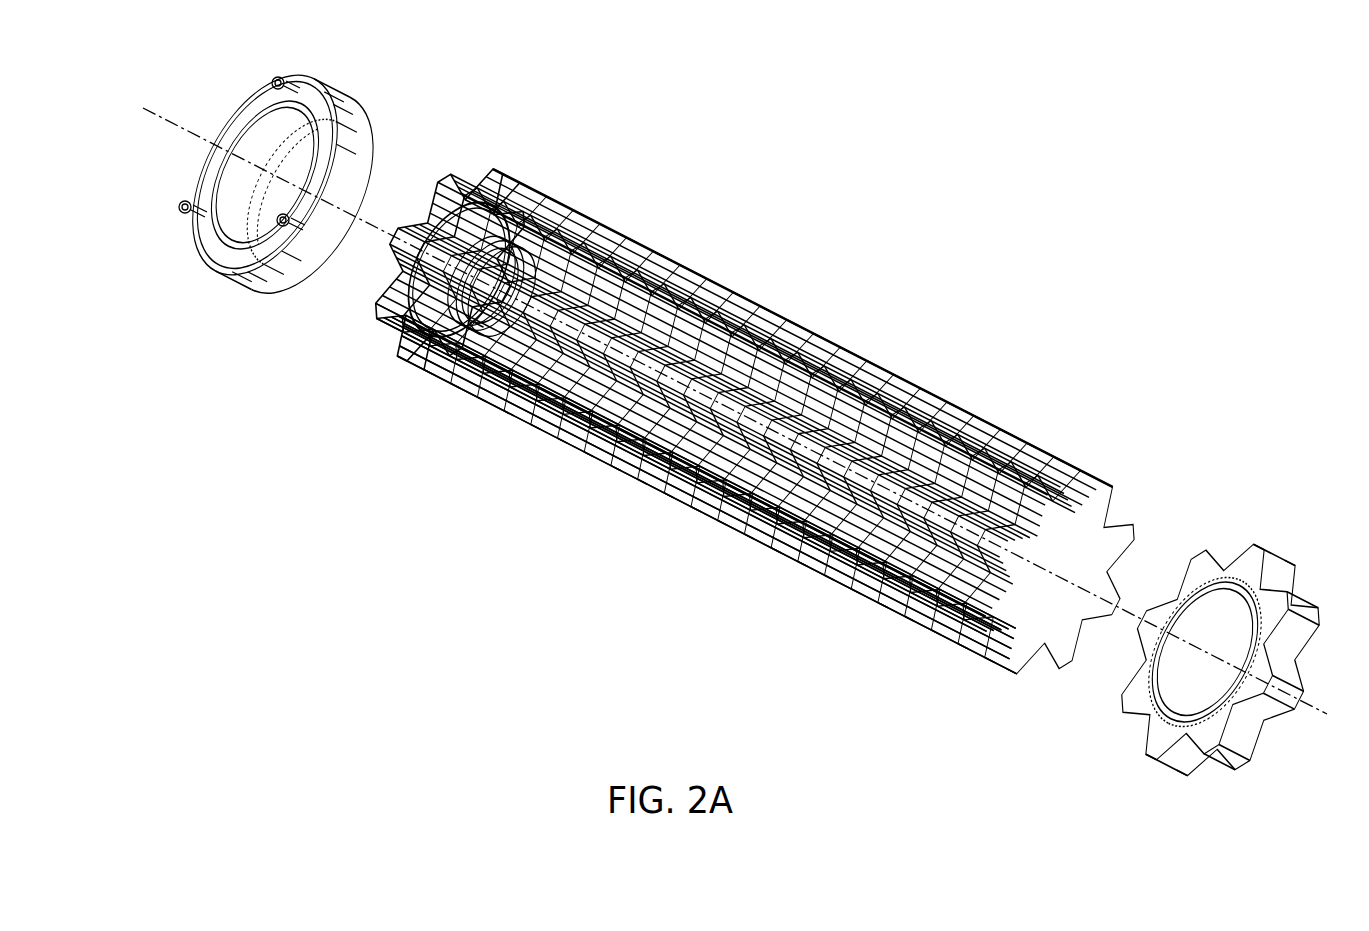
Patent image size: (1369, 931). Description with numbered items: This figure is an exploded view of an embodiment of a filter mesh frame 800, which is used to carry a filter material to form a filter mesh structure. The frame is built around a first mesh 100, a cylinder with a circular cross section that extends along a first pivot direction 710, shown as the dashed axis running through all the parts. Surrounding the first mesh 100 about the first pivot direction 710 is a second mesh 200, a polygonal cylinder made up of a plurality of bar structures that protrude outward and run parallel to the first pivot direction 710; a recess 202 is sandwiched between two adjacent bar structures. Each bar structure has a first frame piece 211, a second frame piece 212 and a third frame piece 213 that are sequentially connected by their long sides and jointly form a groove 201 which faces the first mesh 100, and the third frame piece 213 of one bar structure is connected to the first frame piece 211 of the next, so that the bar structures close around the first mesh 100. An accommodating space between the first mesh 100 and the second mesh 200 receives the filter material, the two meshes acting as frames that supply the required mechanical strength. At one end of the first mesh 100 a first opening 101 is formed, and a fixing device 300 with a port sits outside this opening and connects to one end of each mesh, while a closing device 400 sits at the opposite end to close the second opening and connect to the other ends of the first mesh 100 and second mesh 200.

The first pivot direction 710 is at (180, 127).
The fixing device 300 is at (250, 282).
The filter mesh frame 800 is at (480, 103).
The second mesh 200 is at (728, 416).
The groove 201 is at (390, 302).
The recess 202 is at (428, 378).
The first frame piece 211 is at (393, 335).
The second frame piece 212 is at (395, 358).
The third frame piece 213 is at (412, 368).
The first mesh 100 is at (474, 233).
The first opening 101 is at (458, 242).
The closing device 400 is at (1178, 745).